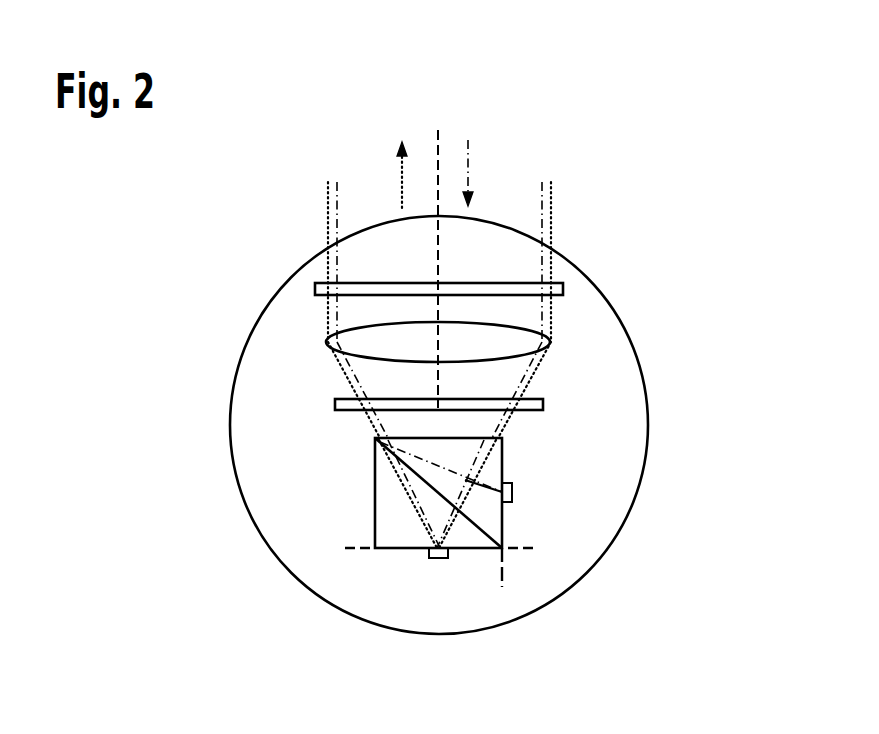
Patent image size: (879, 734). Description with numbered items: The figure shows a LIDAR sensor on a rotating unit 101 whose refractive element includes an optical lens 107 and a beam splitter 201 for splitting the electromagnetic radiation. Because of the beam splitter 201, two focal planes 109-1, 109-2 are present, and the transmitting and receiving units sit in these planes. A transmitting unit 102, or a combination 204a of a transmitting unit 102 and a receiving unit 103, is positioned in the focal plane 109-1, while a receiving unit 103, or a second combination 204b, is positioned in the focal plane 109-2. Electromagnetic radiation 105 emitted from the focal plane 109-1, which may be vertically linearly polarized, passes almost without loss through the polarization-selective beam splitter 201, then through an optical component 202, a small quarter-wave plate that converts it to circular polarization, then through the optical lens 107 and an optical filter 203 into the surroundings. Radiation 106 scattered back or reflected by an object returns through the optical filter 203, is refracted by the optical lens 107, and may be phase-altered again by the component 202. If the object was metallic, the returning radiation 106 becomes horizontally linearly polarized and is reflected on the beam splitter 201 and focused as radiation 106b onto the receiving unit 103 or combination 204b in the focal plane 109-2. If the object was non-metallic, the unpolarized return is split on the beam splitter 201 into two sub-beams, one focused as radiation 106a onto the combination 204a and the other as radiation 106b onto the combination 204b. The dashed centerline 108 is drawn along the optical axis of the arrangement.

The rotating unit 101 is at (231, 417).
The transmitting unit 102 is at (446, 611).
The receiving unit 103 is at (645, 499).
The emitted electromagnetic radiation 105 is at (402, 180).
The scattered back and/or reflected electromagnetic radiation 106 is at (470, 180).
The radiation sub-beam 106a is at (400, 489).
The radiation sub-beam 106b is at (503, 450).
The optical lens 107 is at (330, 343).
The optical axis 108 is at (438, 135).
The focal plane 109-1 is at (367, 548).
The focal plane 109-2 is at (503, 580).
The beam splitter 201 is at (375, 528).
The optical component 202 is at (543, 404).
The optical filter 203 is at (563, 289).
The combination of a transmitting unit and a receiving unit 204a is at (438, 558).
The second combination of a transmitting unit and a receiving unit 204b is at (512, 490).